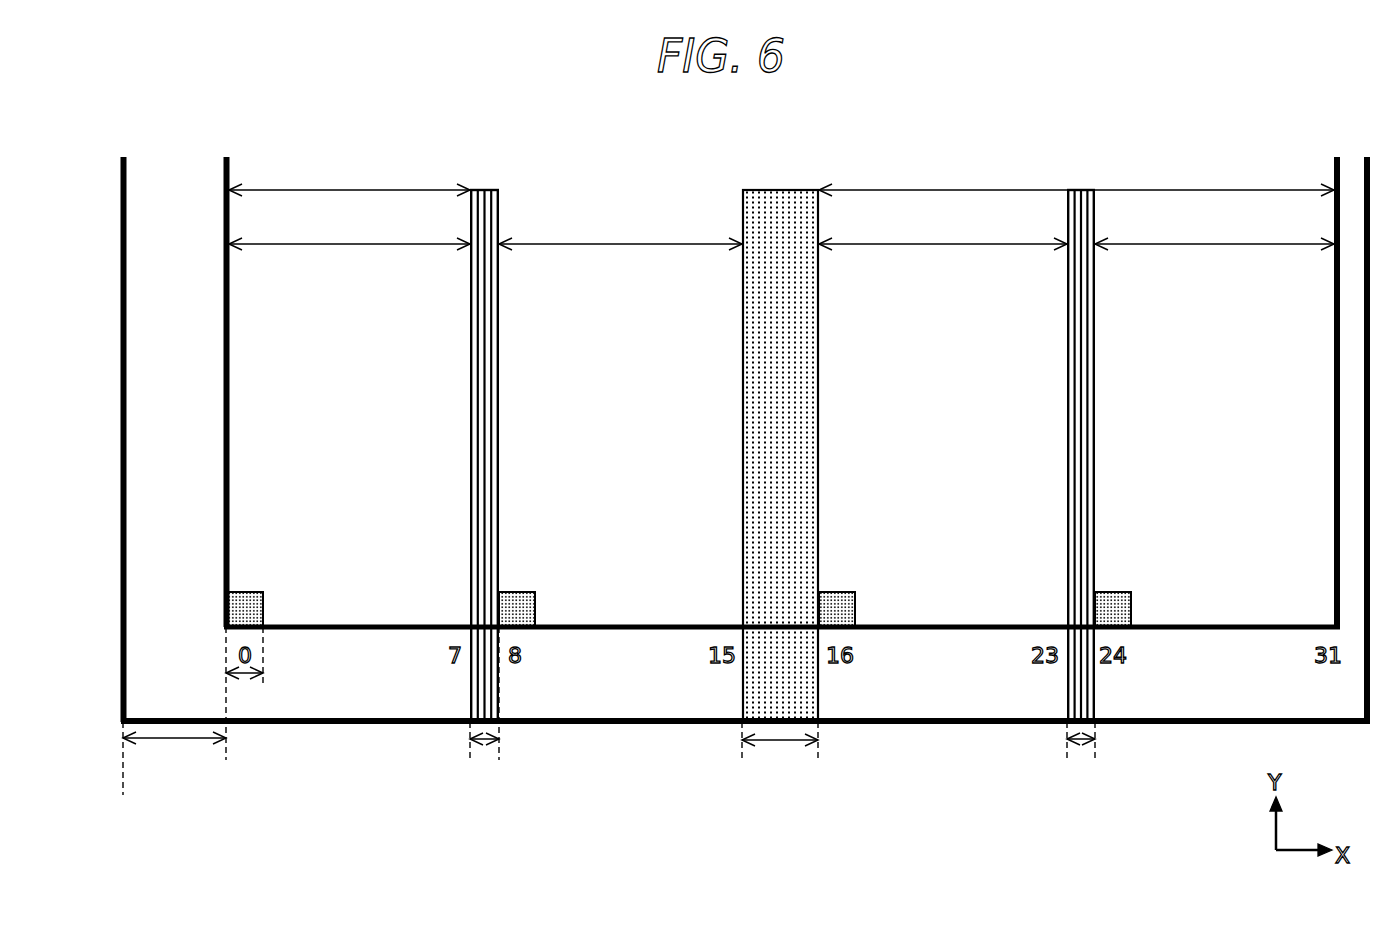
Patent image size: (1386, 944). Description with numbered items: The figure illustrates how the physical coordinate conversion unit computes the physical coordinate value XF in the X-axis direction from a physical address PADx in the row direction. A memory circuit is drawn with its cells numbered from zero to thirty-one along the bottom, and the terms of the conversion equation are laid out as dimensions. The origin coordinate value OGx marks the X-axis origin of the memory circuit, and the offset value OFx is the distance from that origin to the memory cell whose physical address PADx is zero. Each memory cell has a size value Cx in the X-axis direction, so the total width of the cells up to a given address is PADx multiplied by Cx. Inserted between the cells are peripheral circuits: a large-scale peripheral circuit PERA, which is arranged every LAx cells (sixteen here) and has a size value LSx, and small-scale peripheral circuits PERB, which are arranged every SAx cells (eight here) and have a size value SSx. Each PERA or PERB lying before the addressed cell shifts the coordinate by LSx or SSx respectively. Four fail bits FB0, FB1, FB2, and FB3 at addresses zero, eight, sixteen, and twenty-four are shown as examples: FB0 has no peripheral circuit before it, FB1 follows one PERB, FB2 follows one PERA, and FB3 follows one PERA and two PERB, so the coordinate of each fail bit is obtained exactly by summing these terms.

The small-scale peripheral circuit PERB is at (470, 402).
The large-scale peripheral circuit PERA is at (742, 400).
The fail bit FB0 is at (251, 592).
The fail bit FB1 is at (519, 592).
The fail bit FB2 is at (842, 592).
The fail bit FB3 is at (1119, 592).
The arrangement spacing value of the large-scale peripheral circuit LAx is at (781, 179).
The arrangement spacing value of the small-scale peripheral circuit SAx is at (781, 233).
The size value of the memory cell Cx is at (244, 669).
The offset value OFx is at (174, 701).
The origin coordinate value OGx is at (122, 777).
The size value of the small-scale peripheral circuit SSx is at (784, 711).
The size value of the large-scale peripheral circuit LSx is at (780, 751).
The physical address in the row direction PADx is at (188, 654).